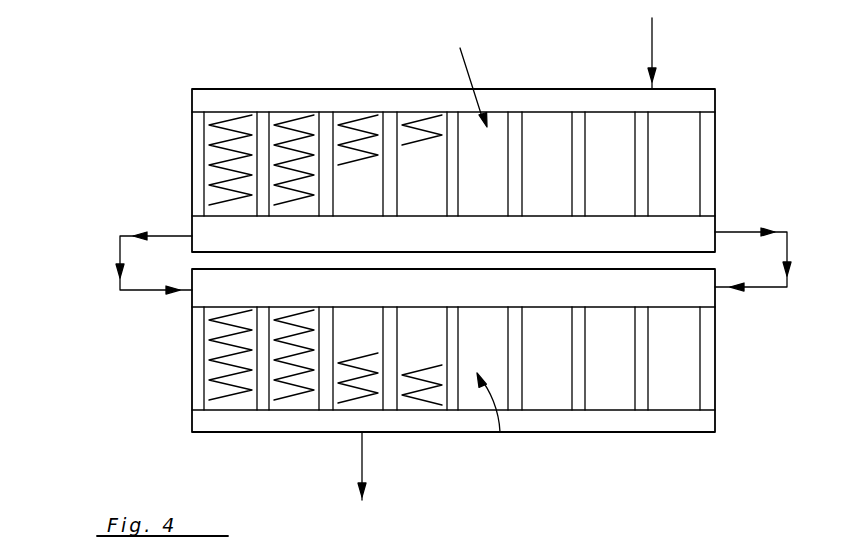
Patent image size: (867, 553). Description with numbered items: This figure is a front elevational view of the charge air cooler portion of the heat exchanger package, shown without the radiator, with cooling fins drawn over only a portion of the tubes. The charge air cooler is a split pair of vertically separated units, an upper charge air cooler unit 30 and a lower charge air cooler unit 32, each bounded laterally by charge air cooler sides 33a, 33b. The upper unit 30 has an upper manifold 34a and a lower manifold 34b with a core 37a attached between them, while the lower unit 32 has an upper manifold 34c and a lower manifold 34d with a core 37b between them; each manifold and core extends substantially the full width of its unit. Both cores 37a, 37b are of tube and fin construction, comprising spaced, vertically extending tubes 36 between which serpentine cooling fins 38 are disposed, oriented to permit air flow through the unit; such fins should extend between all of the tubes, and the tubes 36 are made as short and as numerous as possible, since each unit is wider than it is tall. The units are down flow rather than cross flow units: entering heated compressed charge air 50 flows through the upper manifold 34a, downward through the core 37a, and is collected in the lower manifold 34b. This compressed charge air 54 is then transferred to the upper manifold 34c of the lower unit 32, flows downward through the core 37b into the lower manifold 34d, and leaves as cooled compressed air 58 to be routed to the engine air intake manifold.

The upper charge air cooler unit 30 is at (128, 181).
The lower charge air cooler unit 32 is at (128, 393).
The charge air cooler side 33a is at (715, 165).
The charge air cooler side 33b is at (192, 137).
The upper manifold 34a is at (703, 98).
The lower manifold 34b is at (702, 224).
The upper manifold 34c is at (195, 303).
The lower manifold 34d is at (700, 422).
The tubes 36 is at (328, 122).
The core 37a is at (460, 48).
The core 37b is at (500, 432).
The serpentine cooling fins 38 is at (231, 128).
The heated compressed charge air 50 is at (653, 34).
The compressed charge air 54 is at (120, 258).
The cooled compressed air 58 is at (363, 462).